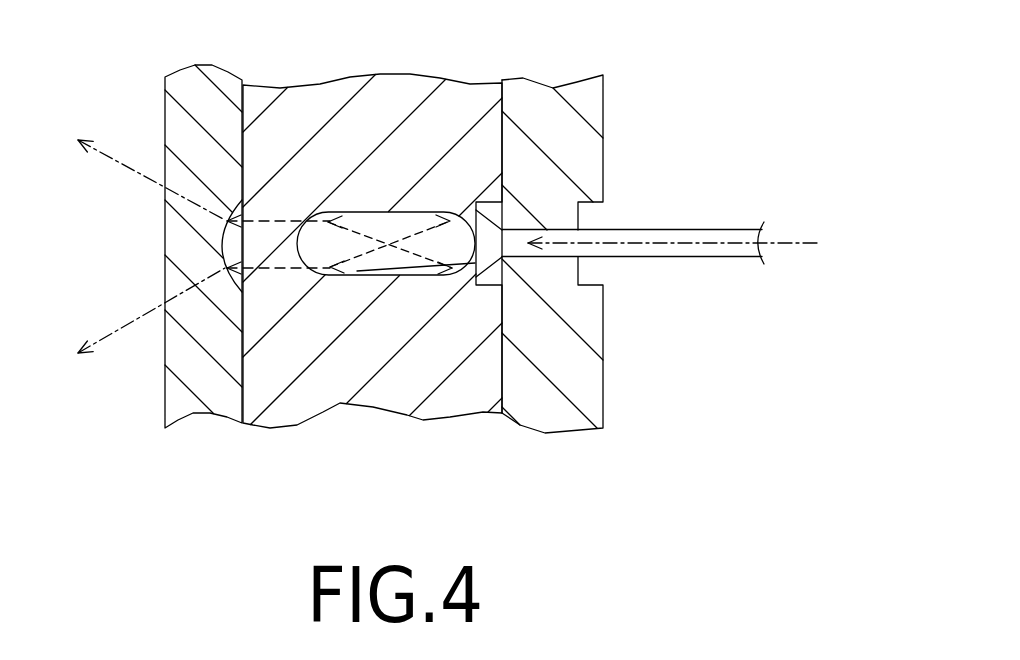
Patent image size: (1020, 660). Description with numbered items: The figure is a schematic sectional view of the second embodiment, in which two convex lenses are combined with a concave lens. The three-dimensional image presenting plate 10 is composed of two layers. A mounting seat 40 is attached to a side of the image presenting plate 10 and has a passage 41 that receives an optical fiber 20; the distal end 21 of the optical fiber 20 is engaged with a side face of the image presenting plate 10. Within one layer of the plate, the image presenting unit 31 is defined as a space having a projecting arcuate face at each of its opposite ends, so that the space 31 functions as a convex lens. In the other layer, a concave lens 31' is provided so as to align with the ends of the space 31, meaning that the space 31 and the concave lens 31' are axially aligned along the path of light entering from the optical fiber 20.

The 3D image presenting plate 10 is at (285, 67).
The optical fiber 20 is at (682, 250).
The distal end 21 is at (475, 263).
The 3D image presenting unit 31 is at (411, 339).
The concave lens 31' is at (204, 246).
The mounting seat 40 is at (593, 147).
The passage 41 is at (528, 228).